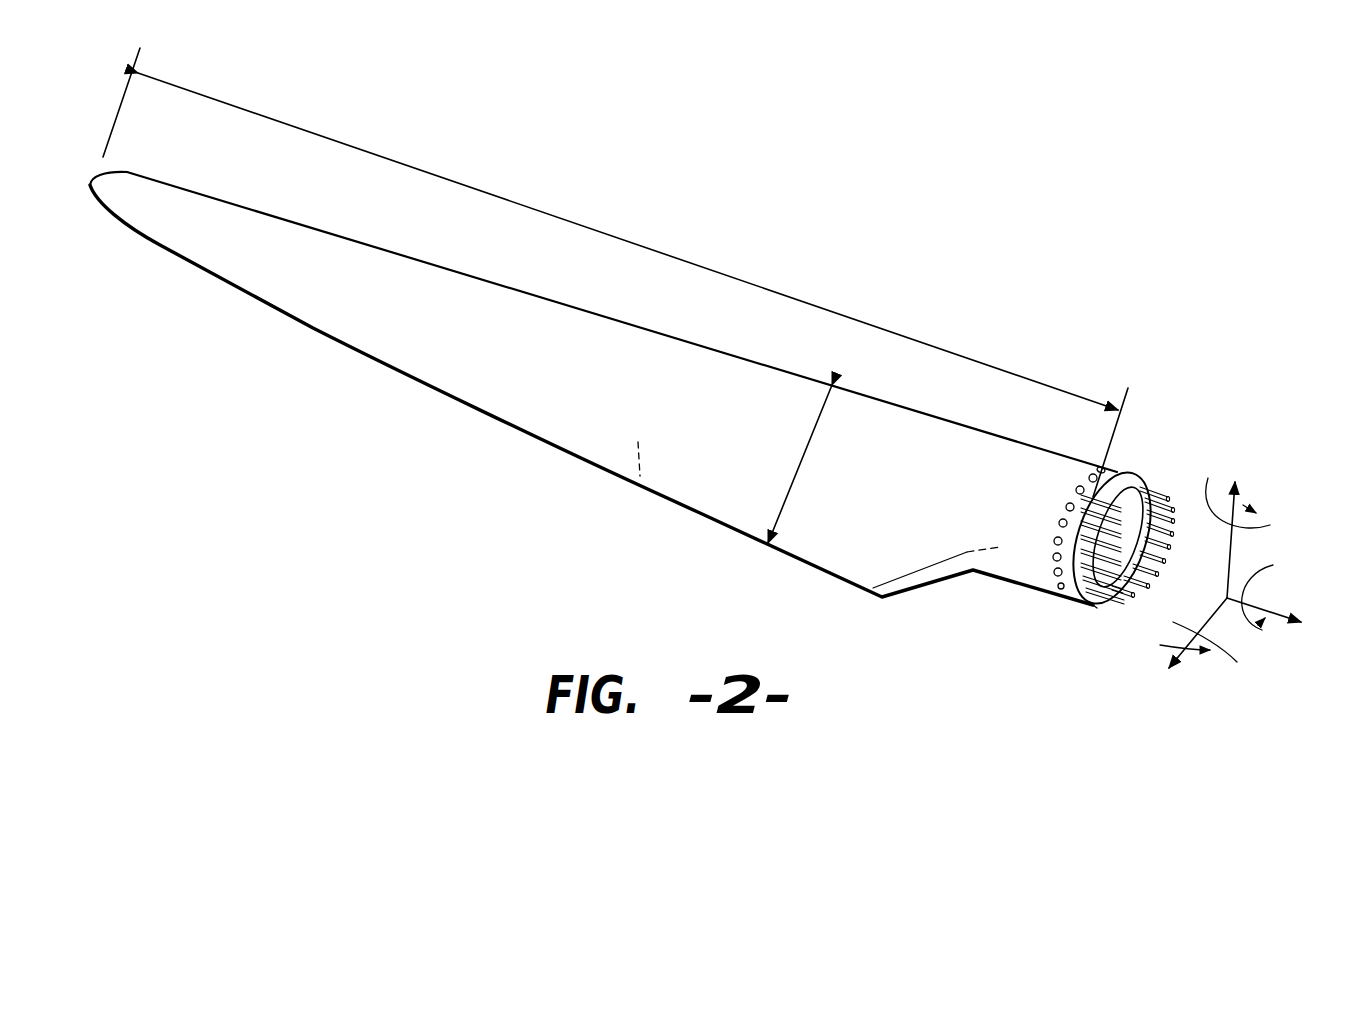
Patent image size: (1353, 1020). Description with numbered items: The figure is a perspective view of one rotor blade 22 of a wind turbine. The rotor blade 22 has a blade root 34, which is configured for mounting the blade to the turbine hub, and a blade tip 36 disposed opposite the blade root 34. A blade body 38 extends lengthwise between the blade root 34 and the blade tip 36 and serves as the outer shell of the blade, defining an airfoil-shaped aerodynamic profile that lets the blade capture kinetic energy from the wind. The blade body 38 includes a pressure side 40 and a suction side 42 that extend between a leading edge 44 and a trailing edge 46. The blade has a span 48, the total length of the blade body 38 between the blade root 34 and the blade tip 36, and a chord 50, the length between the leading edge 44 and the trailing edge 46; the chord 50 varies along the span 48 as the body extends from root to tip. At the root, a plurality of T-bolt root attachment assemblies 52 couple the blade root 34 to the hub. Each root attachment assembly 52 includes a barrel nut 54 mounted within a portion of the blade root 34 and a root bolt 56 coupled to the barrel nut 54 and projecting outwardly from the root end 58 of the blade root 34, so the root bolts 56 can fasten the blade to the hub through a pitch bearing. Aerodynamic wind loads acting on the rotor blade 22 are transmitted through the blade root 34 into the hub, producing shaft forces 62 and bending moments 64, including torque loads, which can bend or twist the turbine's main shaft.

The rotor blade 22 is at (999, 260).
The blade root 34 is at (1045, 582).
The blade tip 36 is at (92, 183).
The blade body 38 is at (483, 308).
The pressure side 40 is at (638, 487).
The suction side 42 is at (380, 327).
The leading edge 44 is at (680, 337).
The trailing edge 46 is at (492, 418).
The span 48 is at (660, 252).
The chord 50 is at (797, 475).
The root attachment assembly 52 is at (1045, 537).
The barrel nut 54 is at (1082, 480).
The root bolt 56 is at (1167, 520).
The root end 58 is at (1095, 602).
The shaft forces 62 is at (1148, 640).
The bending moments 64 is at (1258, 528).